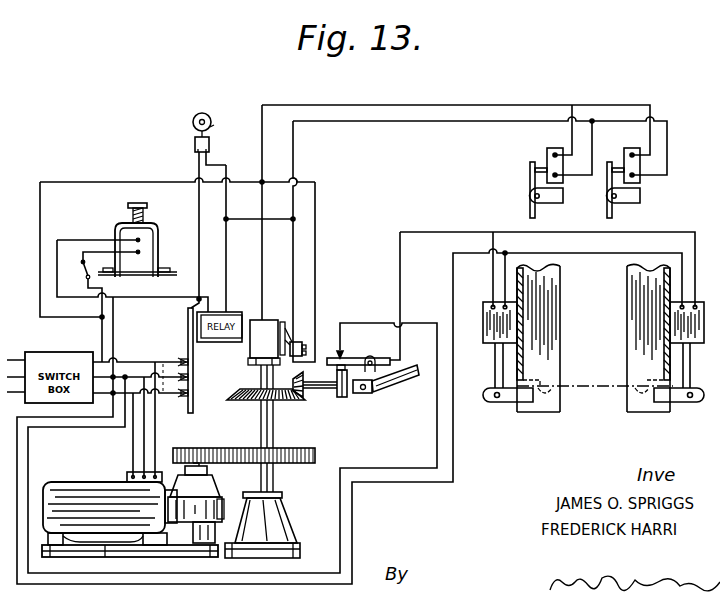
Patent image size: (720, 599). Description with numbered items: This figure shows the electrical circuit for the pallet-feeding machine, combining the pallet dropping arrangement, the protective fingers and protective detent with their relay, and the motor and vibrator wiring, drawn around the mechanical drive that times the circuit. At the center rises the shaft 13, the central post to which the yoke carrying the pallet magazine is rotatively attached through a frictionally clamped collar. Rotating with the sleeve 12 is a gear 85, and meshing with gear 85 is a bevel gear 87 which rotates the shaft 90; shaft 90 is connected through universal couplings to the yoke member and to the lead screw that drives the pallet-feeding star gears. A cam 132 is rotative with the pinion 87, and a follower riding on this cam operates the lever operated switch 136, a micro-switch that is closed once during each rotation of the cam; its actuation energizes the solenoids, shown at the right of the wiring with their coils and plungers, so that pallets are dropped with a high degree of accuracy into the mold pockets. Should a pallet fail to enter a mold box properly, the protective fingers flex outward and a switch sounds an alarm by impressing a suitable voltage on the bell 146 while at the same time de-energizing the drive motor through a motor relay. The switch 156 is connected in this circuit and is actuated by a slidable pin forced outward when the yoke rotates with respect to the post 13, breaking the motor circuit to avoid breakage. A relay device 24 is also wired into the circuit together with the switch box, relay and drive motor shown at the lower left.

The bell 146 is at (210, 119).
The relay switch 24 is at (158, 234).
The switch 156 is at (297, 341).
The lever operated switch 136 is at (349, 358).
The shaft 13 is at (262, 377).
The gear 85 is at (245, 401).
The sleeve 12 is at (261, 428).
The bevel gear 87 is at (306, 396).
The cam 132 is at (344, 397).
The shaft 90 is at (391, 385).